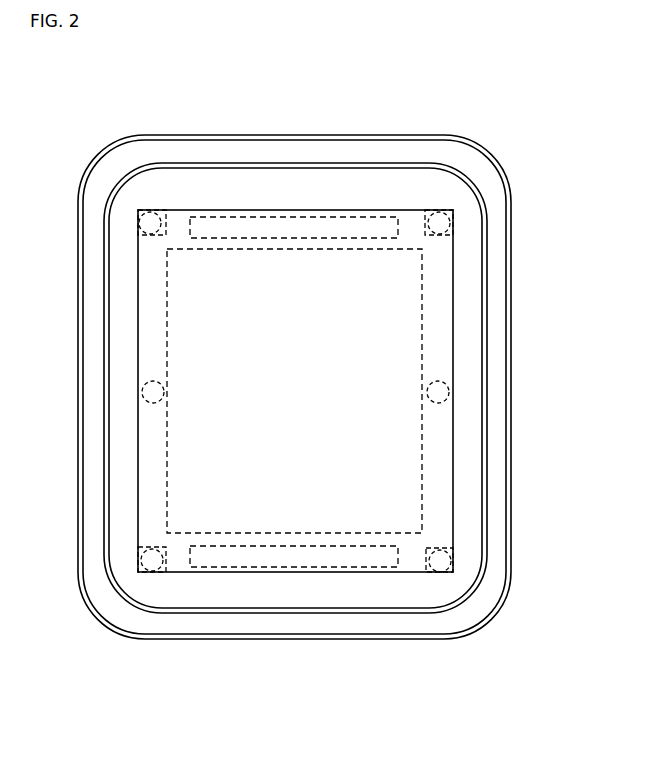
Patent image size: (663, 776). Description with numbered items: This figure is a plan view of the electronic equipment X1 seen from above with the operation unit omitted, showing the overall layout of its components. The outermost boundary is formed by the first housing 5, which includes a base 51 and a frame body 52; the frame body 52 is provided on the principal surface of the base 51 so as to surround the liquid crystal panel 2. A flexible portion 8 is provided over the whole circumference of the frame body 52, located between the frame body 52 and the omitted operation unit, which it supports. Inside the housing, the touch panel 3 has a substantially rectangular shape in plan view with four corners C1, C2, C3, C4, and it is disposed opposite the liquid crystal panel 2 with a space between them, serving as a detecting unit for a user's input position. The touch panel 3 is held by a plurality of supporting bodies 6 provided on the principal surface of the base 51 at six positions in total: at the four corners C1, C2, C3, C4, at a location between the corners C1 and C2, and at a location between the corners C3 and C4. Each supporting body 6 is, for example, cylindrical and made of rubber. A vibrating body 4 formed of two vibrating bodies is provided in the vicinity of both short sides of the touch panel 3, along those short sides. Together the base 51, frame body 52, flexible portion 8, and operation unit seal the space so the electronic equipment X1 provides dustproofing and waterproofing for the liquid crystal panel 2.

The electronic equipment X1 is at (508, 78).
The liquid crystal panel 2 is at (410, 458).
The touch panel 3 is at (441, 263).
The vibrating body 4 is at (297, 228).
The first housing 5 is at (320, 715).
The base 51 is at (325, 592).
The frame body 52 is at (368, 636).
The supporting body 6 is at (140, 225).
The flexible portion 8 is at (497, 352).
The corner C1 is at (148, 222).
The corner C2 is at (150, 547).
The corner C3 is at (436, 222).
The corner C4 is at (440, 548).